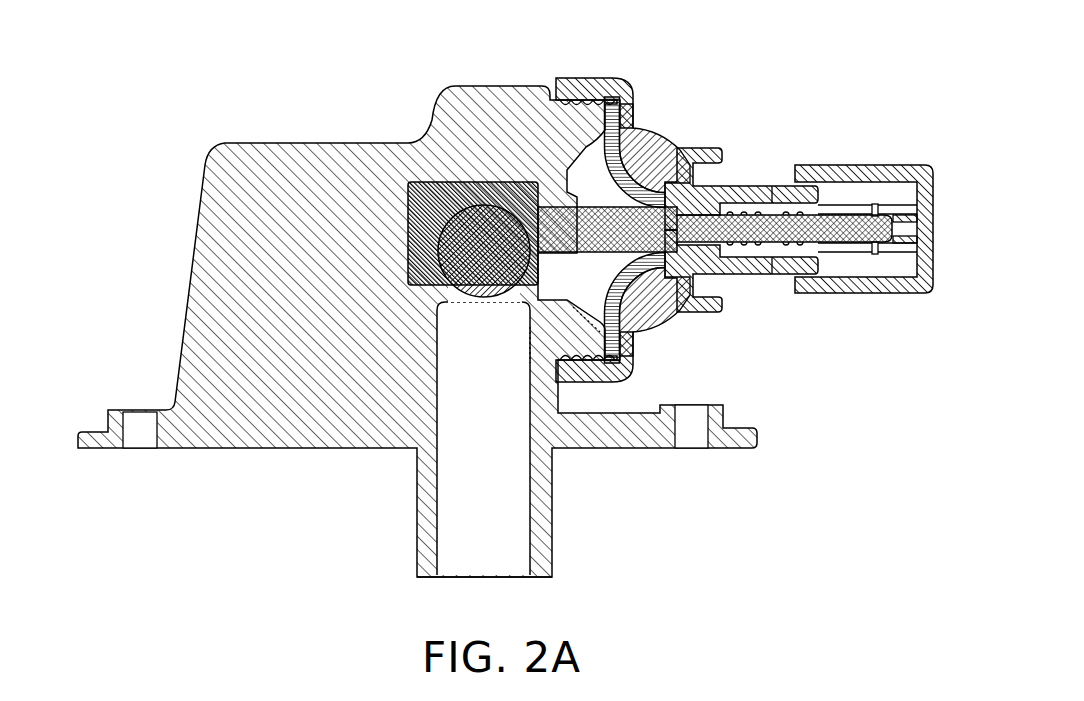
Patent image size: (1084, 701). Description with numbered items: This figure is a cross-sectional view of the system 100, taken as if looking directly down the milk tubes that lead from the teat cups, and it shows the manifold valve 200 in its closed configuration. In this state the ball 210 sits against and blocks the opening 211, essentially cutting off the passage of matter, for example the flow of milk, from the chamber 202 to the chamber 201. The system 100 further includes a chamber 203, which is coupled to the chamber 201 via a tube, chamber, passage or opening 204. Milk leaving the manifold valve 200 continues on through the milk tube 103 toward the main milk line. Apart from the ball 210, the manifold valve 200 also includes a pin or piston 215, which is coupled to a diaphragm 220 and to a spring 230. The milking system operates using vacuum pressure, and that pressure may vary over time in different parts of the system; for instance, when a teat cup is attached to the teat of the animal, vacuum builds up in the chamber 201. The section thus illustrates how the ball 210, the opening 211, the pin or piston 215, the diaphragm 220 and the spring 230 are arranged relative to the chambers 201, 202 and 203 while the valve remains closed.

The system 100 is at (505, 292).
The milk tube 103 is at (417, 508).
The manifold valve 200 is at (682, 212).
The chamber 201 is at (515, 528).
The chamber 202 is at (407, 203).
The chamber 203 is at (604, 186).
The opening 204 is at (553, 343).
The ball 210 is at (407, 233).
The opening 211 is at (445, 287).
The pin or piston 215 is at (773, 197).
The diaphragm 220 is at (543, 85).
The spring 230 is at (770, 258).